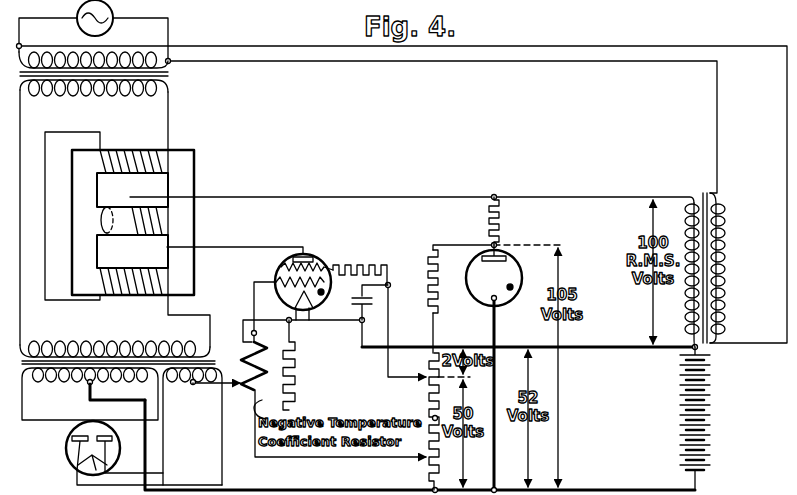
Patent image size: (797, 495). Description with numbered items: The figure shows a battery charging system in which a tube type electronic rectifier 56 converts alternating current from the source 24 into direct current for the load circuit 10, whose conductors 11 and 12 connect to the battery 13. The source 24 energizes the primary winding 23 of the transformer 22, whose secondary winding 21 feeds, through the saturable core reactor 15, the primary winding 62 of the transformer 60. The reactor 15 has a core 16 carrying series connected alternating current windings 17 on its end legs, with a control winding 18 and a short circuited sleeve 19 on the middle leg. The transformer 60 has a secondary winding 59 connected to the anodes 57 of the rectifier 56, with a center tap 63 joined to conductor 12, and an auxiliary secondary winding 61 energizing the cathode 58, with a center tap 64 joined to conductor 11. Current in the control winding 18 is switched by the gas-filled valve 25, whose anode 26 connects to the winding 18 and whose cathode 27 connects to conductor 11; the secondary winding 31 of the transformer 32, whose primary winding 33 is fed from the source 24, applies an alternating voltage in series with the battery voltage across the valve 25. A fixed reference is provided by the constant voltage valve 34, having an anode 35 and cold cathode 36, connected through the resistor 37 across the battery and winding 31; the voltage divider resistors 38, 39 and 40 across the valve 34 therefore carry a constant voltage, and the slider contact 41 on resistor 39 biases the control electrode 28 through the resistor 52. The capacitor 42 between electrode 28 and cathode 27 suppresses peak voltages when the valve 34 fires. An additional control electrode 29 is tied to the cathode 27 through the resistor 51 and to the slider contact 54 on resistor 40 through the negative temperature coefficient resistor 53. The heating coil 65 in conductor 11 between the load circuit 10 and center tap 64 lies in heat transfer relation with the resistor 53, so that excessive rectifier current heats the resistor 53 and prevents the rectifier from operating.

The load circuit 10 is at (258, 316).
The conductor 11 is at (570, 348).
The conductor 12 is at (280, 489).
The battery 13 is at (717, 421).
The saturable core reactor 15 is at (133, 216).
The core 16 is at (188, 189).
The alternating current windings 17 is at (137, 179).
The control winding 18 is at (132, 251).
The short circuited sleeve or winding 19 is at (132, 190).
The secondary winding 21 is at (100, 92).
The transformer 22 is at (180, 87).
The primary winding 23 is at (102, 56).
The source of alternating current 24 is at (113, 12).
The gas-filled electric valve 25 is at (303, 274).
The anode 26 is at (292, 261).
The indirectly heated cathode 27 is at (292, 299).
The control electrode 28 is at (316, 264).
The additional control electrode 29 is at (282, 279).
The secondary winding 31 is at (687, 212).
The transformer 32 is at (707, 260).
The primary winding 33 is at (726, 277).
The electric valve 34 is at (496, 281).
The anode 35 is at (481, 258).
The cold cathode 36 is at (491, 300).
The resistor 37 is at (498, 221).
The resistor 38 is at (430, 256).
The resistor 39 is at (437, 416).
The resistor 40 is at (438, 462).
The slider contact 41 is at (428, 380).
The capacitor 42 is at (356, 302).
The resistor 51 is at (297, 377).
The resistor 52 is at (357, 268).
The negative temperature coefficient resistor 53 is at (260, 374).
The slider contact 54 is at (430, 466).
The tube type electronic rectifier 56 is at (127, 454).
The anodes 57 is at (70, 440).
The cathode 58 is at (80, 466).
The secondary winding 59 is at (47, 382).
The transformer 60 is at (228, 316).
The auxiliary secondary winding 61 is at (212, 384).
The primary winding 62 is at (106, 346).
The center tap 63 is at (90, 384).
The center tap 64 is at (193, 382).
The heating coil 65 is at (236, 365).